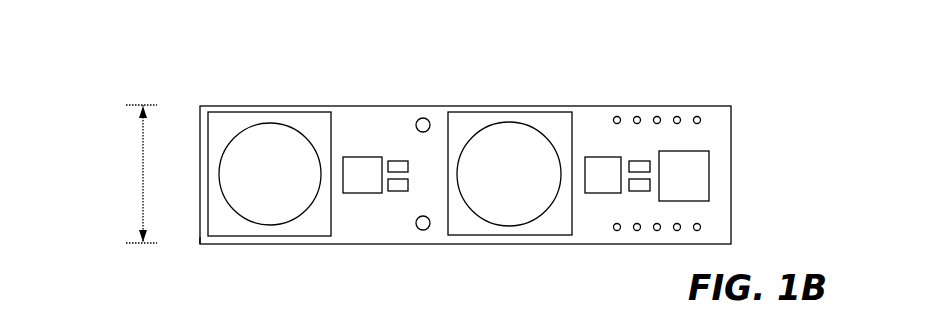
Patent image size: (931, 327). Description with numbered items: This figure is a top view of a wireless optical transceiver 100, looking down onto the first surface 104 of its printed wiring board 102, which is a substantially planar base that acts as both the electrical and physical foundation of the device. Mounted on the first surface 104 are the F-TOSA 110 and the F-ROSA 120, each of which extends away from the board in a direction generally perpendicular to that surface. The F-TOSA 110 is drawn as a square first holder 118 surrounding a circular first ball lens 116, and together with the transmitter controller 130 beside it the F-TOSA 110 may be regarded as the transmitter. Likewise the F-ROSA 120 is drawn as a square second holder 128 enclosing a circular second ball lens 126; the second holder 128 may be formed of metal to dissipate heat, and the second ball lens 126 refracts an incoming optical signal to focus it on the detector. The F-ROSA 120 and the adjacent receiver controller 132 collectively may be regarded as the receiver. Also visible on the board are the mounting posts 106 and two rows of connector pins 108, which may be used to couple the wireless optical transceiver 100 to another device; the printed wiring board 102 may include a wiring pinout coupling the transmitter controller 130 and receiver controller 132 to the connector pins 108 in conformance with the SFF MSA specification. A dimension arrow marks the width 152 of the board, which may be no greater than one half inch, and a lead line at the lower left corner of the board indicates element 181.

The wireless optical transceiver 100 is at (99, 62).
The printed wiring board 102 is at (726, 105).
The first surface 104 is at (720, 158).
The mounting posts 106 is at (422, 230).
The connector pins 108 is at (637, 117).
The F-TOSA 110 is at (285, 139).
The first ball lens 116 is at (247, 128).
The first holder 118 is at (325, 110).
The F-ROSA 120 is at (518, 138).
The second ball lens 126 is at (475, 137).
The second holder 128 is at (562, 110).
The transmitter controller 130 is at (357, 193).
The receiver controller 132 is at (589, 193).
The width 152 is at (143, 173).
The board corner edge 181 is at (200, 237).